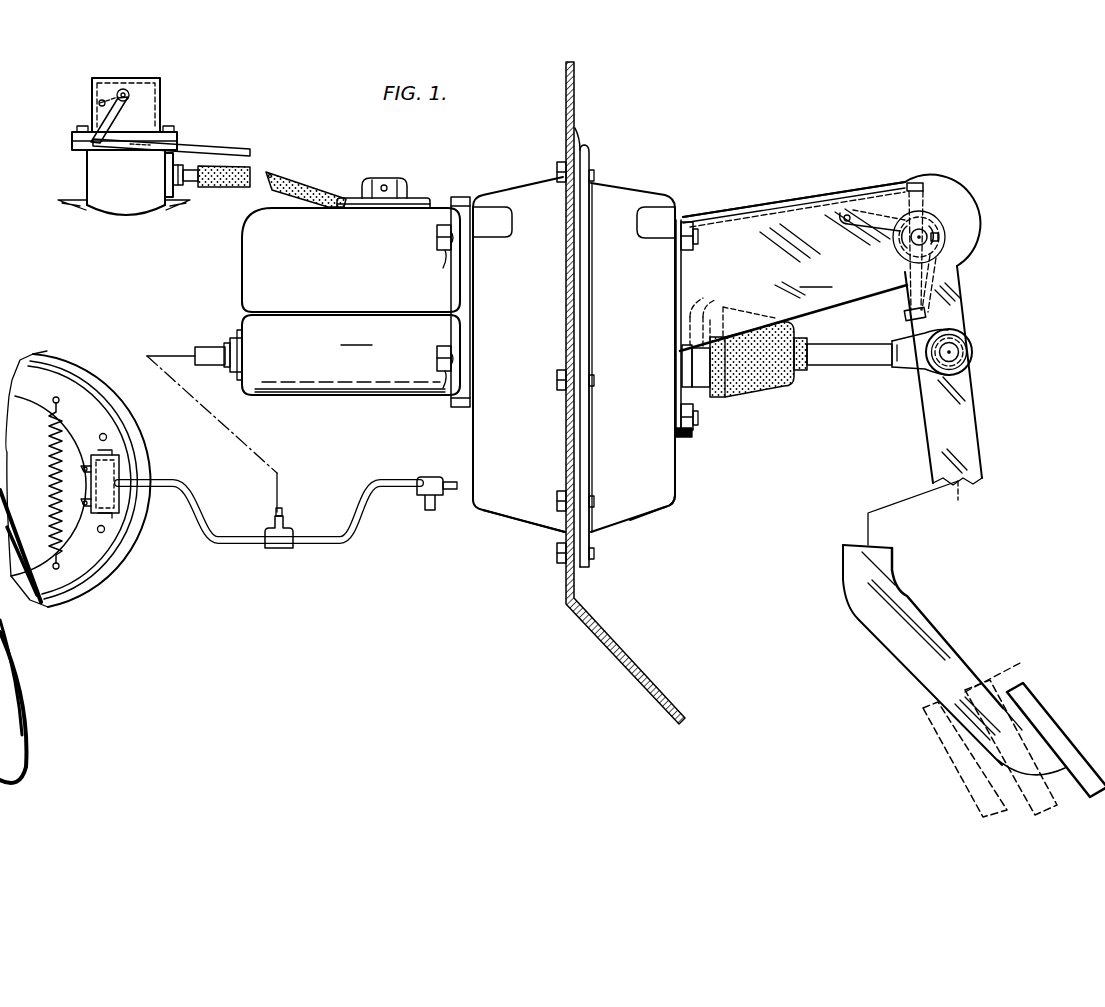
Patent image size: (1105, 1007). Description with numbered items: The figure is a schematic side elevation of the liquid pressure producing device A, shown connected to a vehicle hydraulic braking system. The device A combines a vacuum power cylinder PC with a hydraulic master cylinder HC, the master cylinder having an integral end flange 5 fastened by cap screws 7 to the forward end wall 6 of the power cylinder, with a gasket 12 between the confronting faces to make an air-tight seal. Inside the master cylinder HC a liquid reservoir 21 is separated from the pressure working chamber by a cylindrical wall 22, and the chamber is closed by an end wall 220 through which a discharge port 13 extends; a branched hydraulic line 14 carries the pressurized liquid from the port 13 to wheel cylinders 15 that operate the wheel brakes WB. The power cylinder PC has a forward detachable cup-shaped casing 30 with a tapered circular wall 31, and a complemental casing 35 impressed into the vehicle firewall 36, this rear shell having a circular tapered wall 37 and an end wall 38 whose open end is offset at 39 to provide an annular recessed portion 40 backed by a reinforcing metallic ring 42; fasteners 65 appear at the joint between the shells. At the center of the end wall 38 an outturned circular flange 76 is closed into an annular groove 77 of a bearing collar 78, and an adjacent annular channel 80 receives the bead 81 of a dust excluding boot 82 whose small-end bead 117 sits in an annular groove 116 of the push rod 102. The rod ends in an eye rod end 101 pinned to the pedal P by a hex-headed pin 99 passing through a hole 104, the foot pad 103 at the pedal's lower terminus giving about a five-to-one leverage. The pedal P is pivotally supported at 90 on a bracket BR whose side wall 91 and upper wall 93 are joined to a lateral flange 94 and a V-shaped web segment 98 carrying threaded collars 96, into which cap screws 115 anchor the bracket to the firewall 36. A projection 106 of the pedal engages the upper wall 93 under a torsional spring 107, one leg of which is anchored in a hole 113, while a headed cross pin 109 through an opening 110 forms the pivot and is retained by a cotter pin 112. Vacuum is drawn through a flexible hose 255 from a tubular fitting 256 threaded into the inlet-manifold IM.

The end flange 5 is at (453, 210).
The forward end wall 6 is at (472, 450).
The cap screws 7 is at (436, 235).
The gasket 12 is at (475, 285).
The discharge port 13 is at (228, 341).
The branched hydraulic line 14 is at (213, 350).
The wheel cylinders 15 is at (112, 492).
The liquid reservoir 21 is at (256, 266).
The cylindrical wall 22 is at (384, 380).
The forward cup-shaped casing 30 is at (528, 315).
The tapered circular wall 31 is at (529, 522).
The complemental casing 35 is at (640, 290).
The vehicle firewall 36 is at (574, 104).
The circular tapered wall 37 is at (628, 528).
The end wall 38 is at (678, 492).
The offset 39 is at (578, 135).
The annular recessed portion 40 is at (592, 158).
The reinforcing metallic ring 42 is at (582, 198).
The mounting bolt 65 is at (557, 175).
The outturned circular flange 76 is at (706, 312).
The external annular groove 77 is at (713, 292).
The bearing collar 78 is at (700, 395).
The external annular channel 80 is at (713, 310).
The bead 81 is at (722, 312).
The dust excluding boot 82 is at (747, 392).
The pivot 90 is at (942, 246).
The side wall 91 is at (866, 288).
The upper wall 93 is at (778, 206).
The lateral flange 94 is at (679, 297).
The threaded collar 96 is at (685, 222).
The V-shaped web segment 98 is at (679, 440).
The hex-headed pin 99 is at (970, 360).
The eye rod end 101 is at (968, 340).
The push rod 102 is at (880, 360).
The foot pad 103 is at (977, 688).
The hole 104 is at (968, 352).
The projection 106 is at (913, 184).
The torsional spring 107 is at (907, 317).
The headed cross pin 109 is at (937, 246).
The opening 110 is at (921, 234).
The cotter pin 112 is at (937, 240).
The hole 113 is at (848, 210).
The cap screws 115 is at (700, 236).
The external annular groove 116 is at (814, 369).
The bead 117 is at (804, 372).
The end wall 220 is at (242, 325).
The flexible hose 255 is at (274, 172).
The tubular fitting 256 is at (180, 188).
The inlet-manifold IM is at (97, 167).
The hydraulic master cylinder HC is at (356, 333).
The wheel brakes WB is at (92, 553).
The hydraulic pressure producing device A is at (501, 186).
The vacuum power cylinder PC is at (634, 182).
The bracket BR is at (831, 236).
The pedal P is at (857, 533).